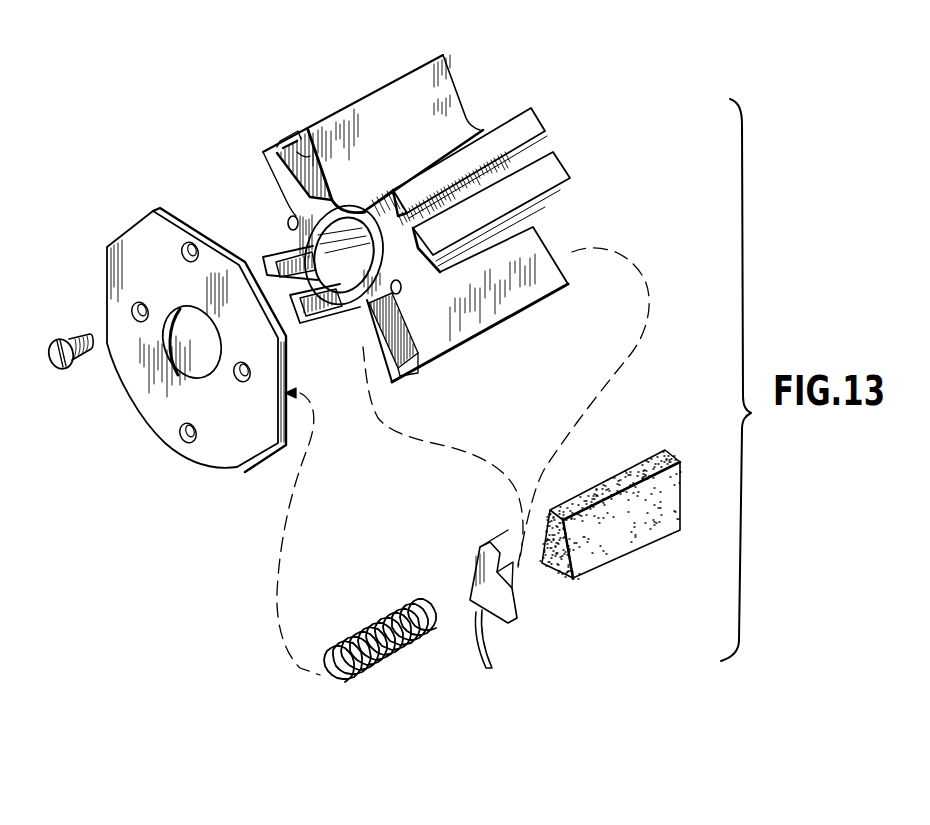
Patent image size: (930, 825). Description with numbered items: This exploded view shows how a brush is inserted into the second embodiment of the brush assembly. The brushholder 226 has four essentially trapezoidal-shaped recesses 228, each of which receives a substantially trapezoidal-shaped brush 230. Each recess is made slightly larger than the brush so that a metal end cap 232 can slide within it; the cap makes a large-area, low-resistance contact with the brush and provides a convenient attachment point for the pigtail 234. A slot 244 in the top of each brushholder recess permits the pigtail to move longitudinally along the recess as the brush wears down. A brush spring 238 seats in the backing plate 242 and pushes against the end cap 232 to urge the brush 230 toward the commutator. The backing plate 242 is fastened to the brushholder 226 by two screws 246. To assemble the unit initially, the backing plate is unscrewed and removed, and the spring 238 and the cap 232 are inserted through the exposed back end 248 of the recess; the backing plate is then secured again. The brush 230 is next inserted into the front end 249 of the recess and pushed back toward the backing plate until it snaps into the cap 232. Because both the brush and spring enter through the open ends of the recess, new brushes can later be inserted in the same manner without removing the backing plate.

The brushholder 226 is at (446, 81).
The trapezoidal-shaped recess 228 is at (290, 147).
The brush 230 is at (588, 494).
The end cap 232 is at (516, 614).
The pigtail 234 is at (490, 645).
The brush spring 238 is at (393, 660).
The backing plate 242 is at (237, 447).
The slot 244 is at (537, 150).
The screw 246 is at (80, 362).
The back end of recess 248 is at (376, 337).
The front end of recess 249 is at (556, 257).